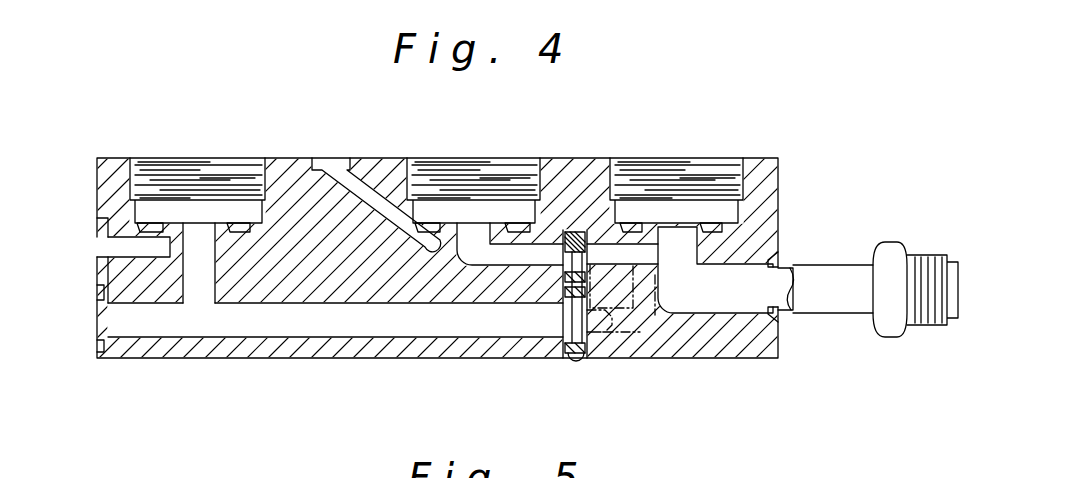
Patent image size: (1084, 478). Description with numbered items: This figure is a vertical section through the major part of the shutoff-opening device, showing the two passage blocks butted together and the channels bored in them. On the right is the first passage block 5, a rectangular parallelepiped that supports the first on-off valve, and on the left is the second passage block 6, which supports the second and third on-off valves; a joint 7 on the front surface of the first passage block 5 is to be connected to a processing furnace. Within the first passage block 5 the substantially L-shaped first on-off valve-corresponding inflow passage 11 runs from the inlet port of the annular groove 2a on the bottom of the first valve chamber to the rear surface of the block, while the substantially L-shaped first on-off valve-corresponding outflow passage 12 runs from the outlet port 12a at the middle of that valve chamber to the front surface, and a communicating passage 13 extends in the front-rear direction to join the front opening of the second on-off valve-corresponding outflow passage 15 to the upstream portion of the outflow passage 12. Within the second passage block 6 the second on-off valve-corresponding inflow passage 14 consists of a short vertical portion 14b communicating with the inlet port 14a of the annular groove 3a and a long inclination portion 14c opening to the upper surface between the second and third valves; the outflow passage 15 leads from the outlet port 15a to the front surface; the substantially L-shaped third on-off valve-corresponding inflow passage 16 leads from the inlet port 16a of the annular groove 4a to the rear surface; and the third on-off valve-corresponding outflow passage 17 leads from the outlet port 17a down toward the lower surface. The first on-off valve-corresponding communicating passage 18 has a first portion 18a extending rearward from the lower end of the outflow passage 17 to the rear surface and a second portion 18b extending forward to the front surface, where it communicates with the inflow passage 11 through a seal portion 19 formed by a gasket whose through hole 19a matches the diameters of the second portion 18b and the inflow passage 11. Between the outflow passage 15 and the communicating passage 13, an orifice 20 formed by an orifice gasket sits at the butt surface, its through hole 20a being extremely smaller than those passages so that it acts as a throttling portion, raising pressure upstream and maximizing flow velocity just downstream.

The annular groove 2a is at (717, 230).
The annular groove 3a is at (513, 220).
The annular groove 4a is at (240, 200).
The first passage block 5 is at (660, 333).
The second passage block 6 is at (333, 350).
The joint 7 is at (891, 240).
The first on-off valve-corresponding inflow passage 11 is at (605, 333).
The first on-off valve-corresponding outflow passage 12 is at (733, 297).
The outlet port 12a is at (678, 225).
The communicating passage 13 is at (613, 253).
The second on-off valve-corresponding inflow passage 14 is at (390, 228).
The inlet port 14a is at (423, 187).
The vertical portion 14b is at (433, 253).
The inclination portion 14c is at (372, 160).
The second on-off valve-corresponding outflow passage 15 is at (507, 253).
The outlet port 15a is at (477, 232).
The third on-off valve-corresponding inflow passage 16 is at (120, 243).
The inlet port 16a is at (160, 230).
The third on-off valve-corresponding outflow passage 17 is at (200, 273).
The outlet port 17a is at (200, 225).
The first on-off valve-corresponding communicating passage 18 is at (260, 322).
The first portion 18a is at (133, 322).
The second portion 18b is at (303, 322).
The seal portion 19 is at (580, 333).
The through hole 19a is at (565, 325).
The orifice 20 is at (580, 237).
The through hole 20a is at (568, 232).